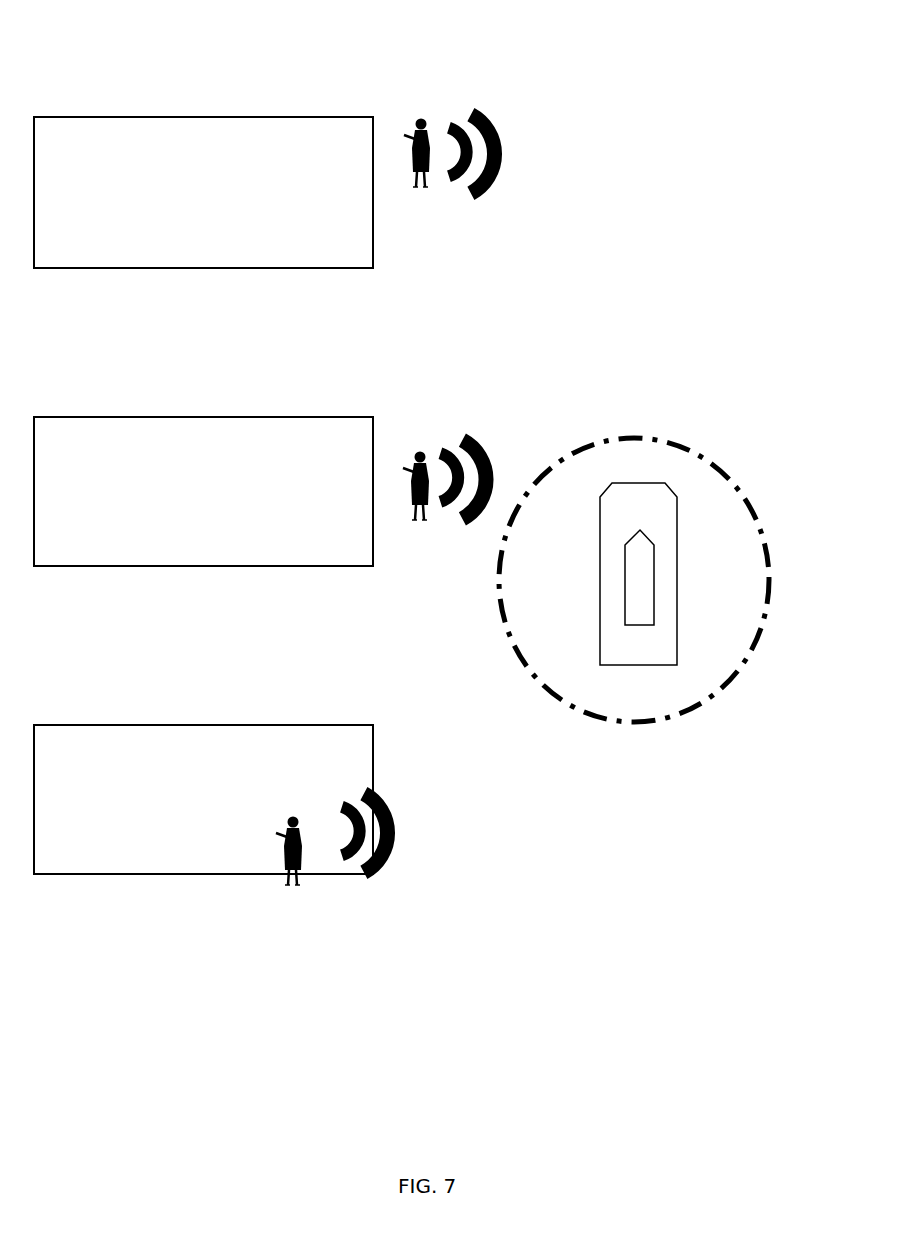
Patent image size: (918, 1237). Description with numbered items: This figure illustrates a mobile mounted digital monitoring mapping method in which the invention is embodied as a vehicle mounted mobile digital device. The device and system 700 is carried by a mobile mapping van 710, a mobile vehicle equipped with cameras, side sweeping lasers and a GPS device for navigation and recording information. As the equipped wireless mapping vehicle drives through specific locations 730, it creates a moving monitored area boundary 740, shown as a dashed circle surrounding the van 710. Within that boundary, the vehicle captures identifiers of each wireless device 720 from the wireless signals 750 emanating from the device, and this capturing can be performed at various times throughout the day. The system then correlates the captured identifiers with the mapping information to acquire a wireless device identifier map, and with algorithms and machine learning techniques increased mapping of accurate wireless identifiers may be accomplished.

The device and system 700 is at (653, 558).
The mobile mapping van 710 is at (683, 638).
The wireless device 720 is at (413, 147).
The specific locations 730 is at (587, 777).
The moving monitored area boundary 740 is at (655, 433).
The wireless signals 750 is at (503, 112).